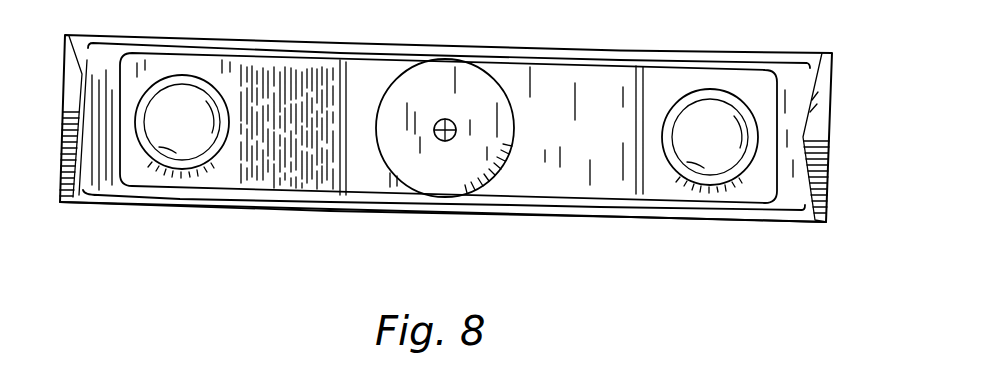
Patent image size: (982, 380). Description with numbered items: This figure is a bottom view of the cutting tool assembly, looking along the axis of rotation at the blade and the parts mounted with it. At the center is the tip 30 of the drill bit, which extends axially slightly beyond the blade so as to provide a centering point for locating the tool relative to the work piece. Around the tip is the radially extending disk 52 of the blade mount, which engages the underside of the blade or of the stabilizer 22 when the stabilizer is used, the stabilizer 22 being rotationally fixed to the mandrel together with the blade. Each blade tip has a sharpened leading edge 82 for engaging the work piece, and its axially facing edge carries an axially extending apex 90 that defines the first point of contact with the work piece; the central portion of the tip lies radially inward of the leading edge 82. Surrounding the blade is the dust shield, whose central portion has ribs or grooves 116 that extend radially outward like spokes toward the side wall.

The stabilizer 22 is at (285, 175).
The tip 30 is at (450, 142).
The radially extending disk 52 is at (420, 77).
The leading edge 82 is at (830, 193).
The apex 90 is at (820, 138).
The ribs/grooves 116 is at (665, 50).